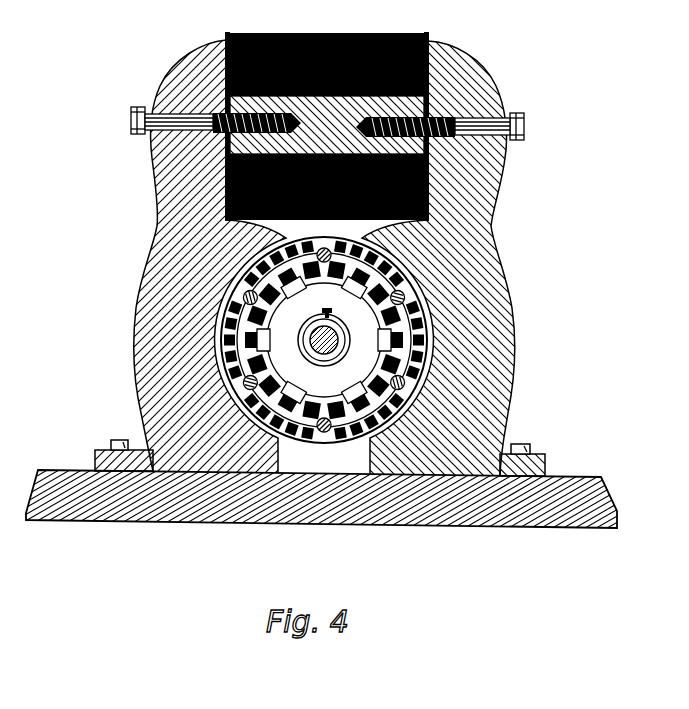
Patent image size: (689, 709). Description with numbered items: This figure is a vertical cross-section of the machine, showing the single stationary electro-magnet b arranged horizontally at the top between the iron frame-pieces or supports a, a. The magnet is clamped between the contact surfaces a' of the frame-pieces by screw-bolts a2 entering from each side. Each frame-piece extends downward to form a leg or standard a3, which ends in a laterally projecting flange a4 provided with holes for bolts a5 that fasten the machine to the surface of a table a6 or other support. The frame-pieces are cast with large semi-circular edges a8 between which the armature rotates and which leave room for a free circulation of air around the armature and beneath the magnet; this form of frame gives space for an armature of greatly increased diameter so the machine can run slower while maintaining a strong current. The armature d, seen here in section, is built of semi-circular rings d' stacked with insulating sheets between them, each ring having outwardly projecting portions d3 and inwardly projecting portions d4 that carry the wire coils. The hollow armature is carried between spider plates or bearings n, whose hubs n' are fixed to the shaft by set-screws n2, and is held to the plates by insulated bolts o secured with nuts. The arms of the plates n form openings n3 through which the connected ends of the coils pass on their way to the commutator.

The frame-pieces or supports a is at (344, 293).
The contact surfaces a' is at (348, 120).
The screw-bolts a2 is at (533, 105).
The legs or standards a3 is at (520, 345).
The laterally projecting flanges a4 is at (552, 441).
The bolts a5 is at (528, 428).
The table a6 is at (395, 512).
The semi-circular edges a8 is at (277, 227).
The stationary magnet b is at (328, 134).
The insulated bolts o is at (324, 229).
The armature d is at (324, 355).
The semi-circular rings d' is at (296, 340).
The outwardly projecting portions d3 is at (435, 361).
The inwardly projecting portions d4 is at (346, 365).
The spider plates or bearings n is at (336, 340).
The hubs n' is at (329, 333).
The set-screws n2 is at (314, 303).
The openings n3 is at (261, 334).